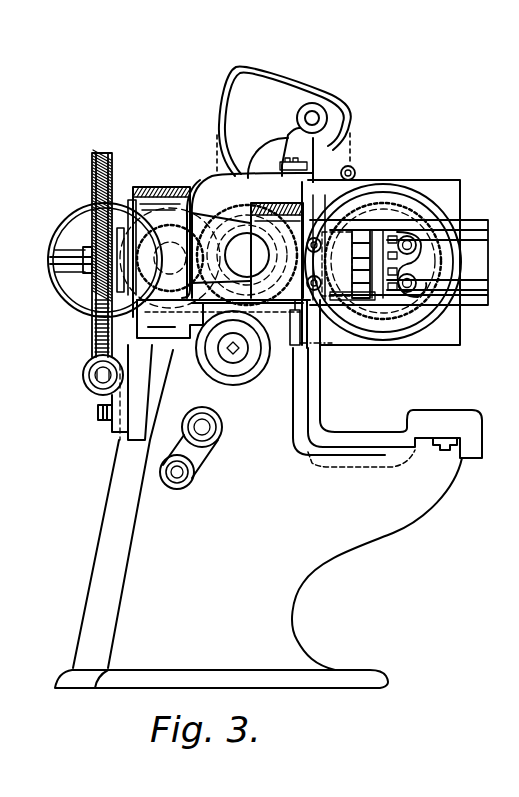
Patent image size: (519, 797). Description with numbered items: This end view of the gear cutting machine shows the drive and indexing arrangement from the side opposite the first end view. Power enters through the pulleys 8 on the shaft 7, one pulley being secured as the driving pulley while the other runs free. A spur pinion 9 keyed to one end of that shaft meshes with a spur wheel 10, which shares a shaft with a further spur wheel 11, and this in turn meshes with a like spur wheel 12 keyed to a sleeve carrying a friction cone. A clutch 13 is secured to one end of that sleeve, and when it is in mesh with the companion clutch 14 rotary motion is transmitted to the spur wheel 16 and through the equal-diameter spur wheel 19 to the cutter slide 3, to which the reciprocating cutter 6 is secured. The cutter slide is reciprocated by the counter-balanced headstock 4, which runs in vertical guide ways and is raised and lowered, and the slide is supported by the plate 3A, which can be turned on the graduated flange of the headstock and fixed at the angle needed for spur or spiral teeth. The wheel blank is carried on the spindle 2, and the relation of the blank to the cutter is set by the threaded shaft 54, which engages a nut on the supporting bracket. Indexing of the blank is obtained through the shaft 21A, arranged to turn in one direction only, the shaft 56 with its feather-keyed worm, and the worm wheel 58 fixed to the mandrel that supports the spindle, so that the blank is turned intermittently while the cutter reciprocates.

The spindle 2 is at (50, 260).
The cutter slide 3 is at (399, 262).
The plate 3A is at (386, 196).
The counter-balanced headstock 4 is at (384, 262).
The reciprocating cutter 6 is at (360, 300).
The shaft 7 is at (130, 215).
The pulleys 8 is at (58, 236).
The spur pinion 9 is at (130, 300).
The spur wheel 10 is at (172, 228).
The spur wheel 11 is at (212, 225).
The spur wheel 12 is at (244, 218).
The clutch 13 is at (283, 312).
The clutch 14 is at (318, 222).
The spur wheel 16 is at (292, 216).
The spur wheel 19 is at (390, 320).
The shaft 21A is at (208, 438).
The threaded shaft 54 is at (227, 350).
The shaft 56 is at (92, 372).
The worm wheel 58 is at (92, 183).